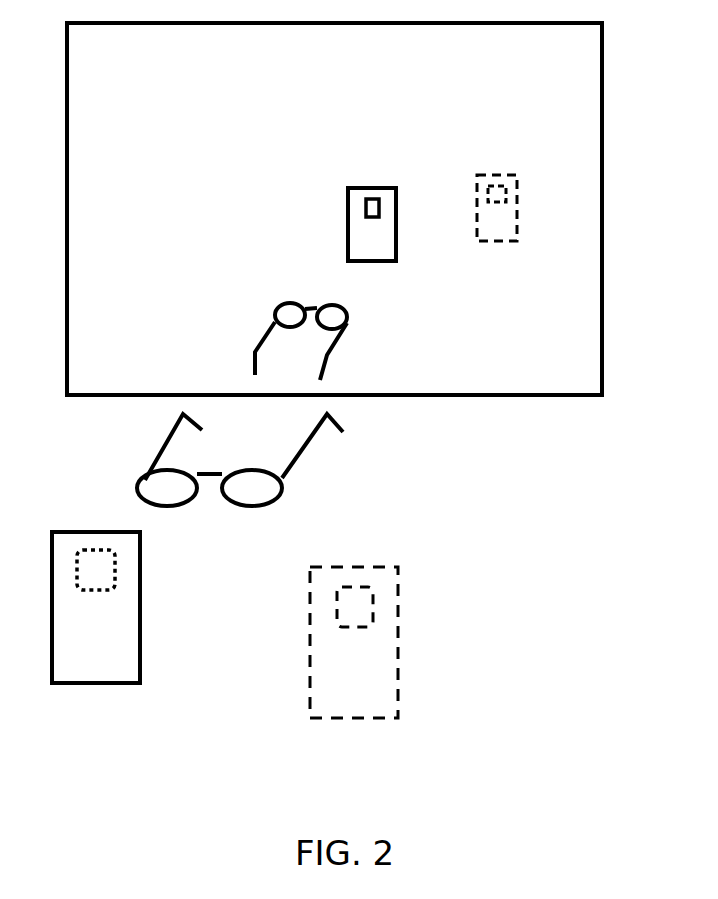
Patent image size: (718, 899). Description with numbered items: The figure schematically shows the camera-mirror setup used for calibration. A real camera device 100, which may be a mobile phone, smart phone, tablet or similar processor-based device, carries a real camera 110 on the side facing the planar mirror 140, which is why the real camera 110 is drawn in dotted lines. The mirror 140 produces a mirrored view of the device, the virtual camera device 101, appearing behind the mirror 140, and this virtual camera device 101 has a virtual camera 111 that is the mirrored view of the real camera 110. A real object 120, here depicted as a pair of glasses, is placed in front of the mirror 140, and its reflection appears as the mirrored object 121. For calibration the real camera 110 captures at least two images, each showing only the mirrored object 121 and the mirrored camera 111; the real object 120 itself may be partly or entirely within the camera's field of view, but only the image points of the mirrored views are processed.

The planar mirror 140 is at (602, 357).
The virtual camera device 101 is at (348, 222).
The virtual camera 111 is at (379, 206).
The mirrored object 121 is at (330, 353).
The real object 120 is at (297, 467).
The real camera device 100 is at (140, 660).
The real camera 110 is at (115, 578).